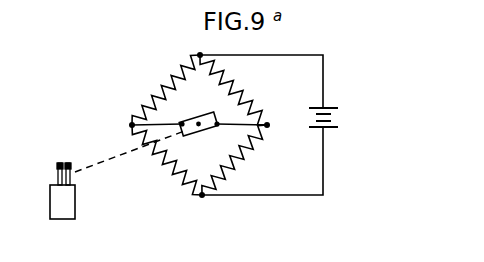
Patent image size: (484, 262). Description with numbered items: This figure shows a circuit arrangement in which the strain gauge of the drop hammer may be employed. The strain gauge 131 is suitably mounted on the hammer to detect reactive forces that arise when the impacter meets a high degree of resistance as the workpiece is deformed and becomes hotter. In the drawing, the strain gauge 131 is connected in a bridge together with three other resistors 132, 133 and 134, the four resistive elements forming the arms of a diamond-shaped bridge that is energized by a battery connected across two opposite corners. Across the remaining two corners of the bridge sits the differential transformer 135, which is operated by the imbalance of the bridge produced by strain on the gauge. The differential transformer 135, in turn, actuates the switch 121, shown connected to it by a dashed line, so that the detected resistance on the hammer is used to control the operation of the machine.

The switch 121 is at (58, 198).
The strain gauge 131 is at (152, 95).
The resistor 132 is at (259, 94).
The resistor 133 is at (240, 165).
The resistor 134 is at (166, 166).
The differential transformer 135 is at (202, 114).